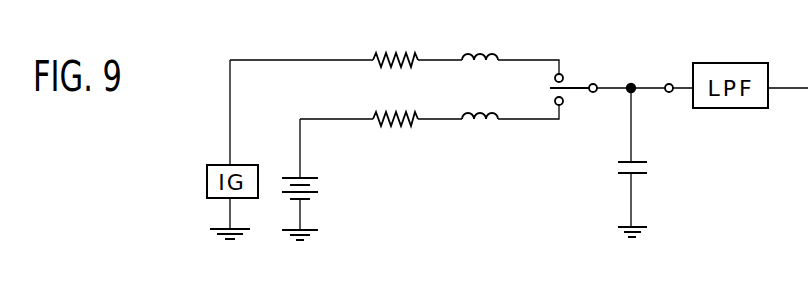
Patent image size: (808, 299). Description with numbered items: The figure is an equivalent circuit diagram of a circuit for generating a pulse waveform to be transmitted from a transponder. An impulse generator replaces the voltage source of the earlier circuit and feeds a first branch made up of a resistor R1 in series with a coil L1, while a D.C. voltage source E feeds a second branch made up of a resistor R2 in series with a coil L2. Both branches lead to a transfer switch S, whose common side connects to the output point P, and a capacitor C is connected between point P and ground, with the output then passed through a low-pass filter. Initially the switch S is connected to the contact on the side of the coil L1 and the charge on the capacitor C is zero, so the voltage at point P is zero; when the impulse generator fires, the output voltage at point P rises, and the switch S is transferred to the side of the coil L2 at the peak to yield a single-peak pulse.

The resistor R1 is at (395, 44).
The coil L1 is at (480, 41).
The resistor R2 is at (395, 104).
The coil L2 is at (480, 100).
The transfer switch S is at (573, 82).
The point P is at (651, 76).
The capacitor C is at (644, 173).
The D.C. voltage source E is at (308, 190).